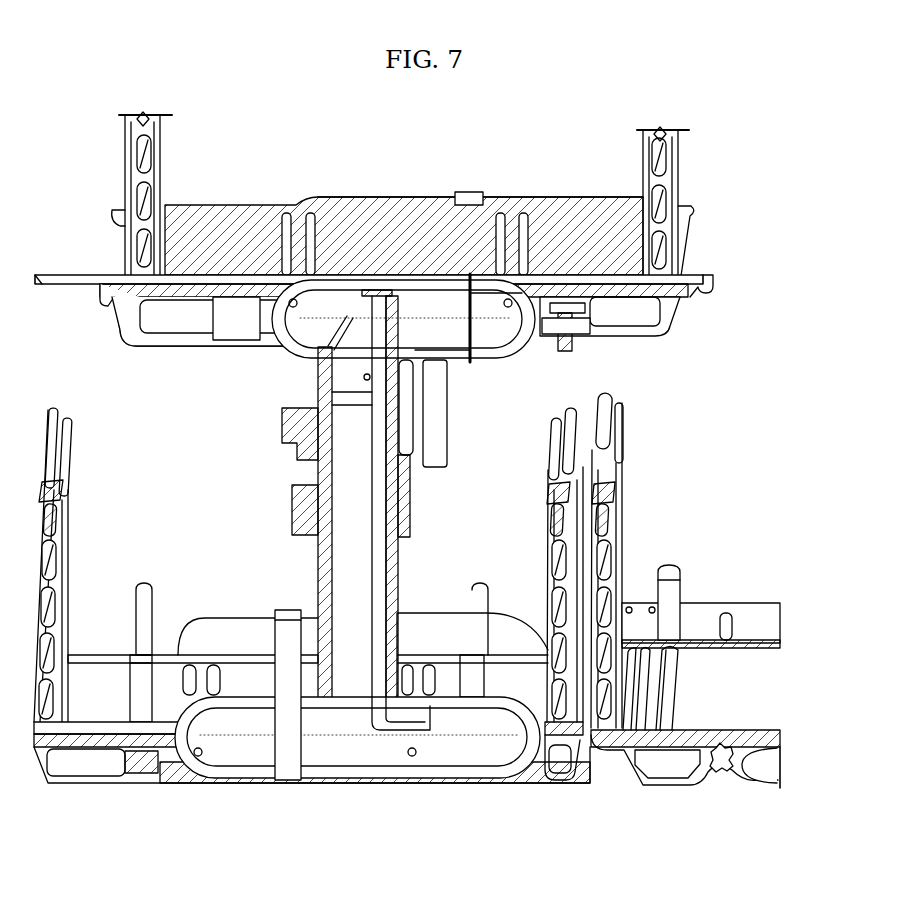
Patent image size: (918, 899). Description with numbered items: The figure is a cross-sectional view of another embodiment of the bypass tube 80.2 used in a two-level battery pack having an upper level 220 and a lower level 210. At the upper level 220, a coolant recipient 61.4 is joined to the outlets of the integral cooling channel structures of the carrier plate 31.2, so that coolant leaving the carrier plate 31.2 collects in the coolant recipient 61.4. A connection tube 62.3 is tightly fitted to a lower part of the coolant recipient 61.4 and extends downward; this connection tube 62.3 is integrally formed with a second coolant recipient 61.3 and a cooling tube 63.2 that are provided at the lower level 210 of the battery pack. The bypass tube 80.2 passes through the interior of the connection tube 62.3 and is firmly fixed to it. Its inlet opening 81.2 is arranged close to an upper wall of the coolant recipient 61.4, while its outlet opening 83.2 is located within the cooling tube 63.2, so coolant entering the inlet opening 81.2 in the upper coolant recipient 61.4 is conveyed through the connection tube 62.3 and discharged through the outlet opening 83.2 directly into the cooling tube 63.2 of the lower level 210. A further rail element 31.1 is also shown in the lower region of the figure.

The upper level 220 is at (423, 237).
The lower level 210 is at (436, 631).
The first support rail lip 31.1 is at (578, 742).
The carrier plate 31.2 is at (712, 290).
The coolant recipient 61.3 is at (320, 782).
The coolant recipient 61.4 is at (263, 292).
The connection tube 62.3 is at (318, 549).
The cooling tube 63.2 is at (487, 752).
The bypass tube 80.2 is at (371, 472).
The inlet opening 81.2 is at (362, 298).
The outlet opening 83.2 is at (428, 718).